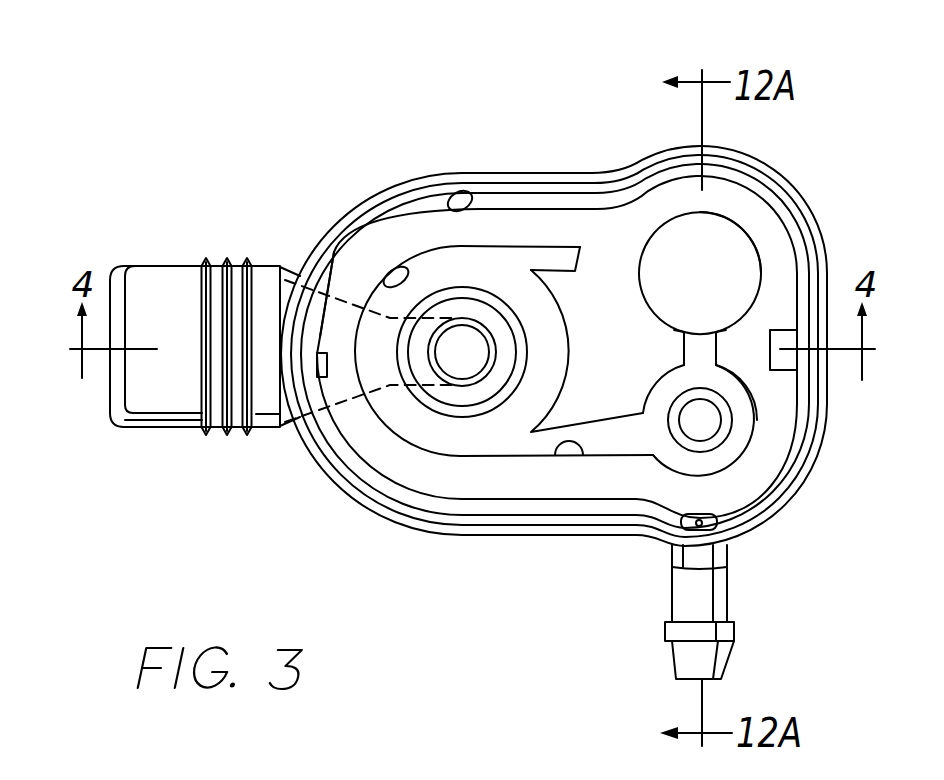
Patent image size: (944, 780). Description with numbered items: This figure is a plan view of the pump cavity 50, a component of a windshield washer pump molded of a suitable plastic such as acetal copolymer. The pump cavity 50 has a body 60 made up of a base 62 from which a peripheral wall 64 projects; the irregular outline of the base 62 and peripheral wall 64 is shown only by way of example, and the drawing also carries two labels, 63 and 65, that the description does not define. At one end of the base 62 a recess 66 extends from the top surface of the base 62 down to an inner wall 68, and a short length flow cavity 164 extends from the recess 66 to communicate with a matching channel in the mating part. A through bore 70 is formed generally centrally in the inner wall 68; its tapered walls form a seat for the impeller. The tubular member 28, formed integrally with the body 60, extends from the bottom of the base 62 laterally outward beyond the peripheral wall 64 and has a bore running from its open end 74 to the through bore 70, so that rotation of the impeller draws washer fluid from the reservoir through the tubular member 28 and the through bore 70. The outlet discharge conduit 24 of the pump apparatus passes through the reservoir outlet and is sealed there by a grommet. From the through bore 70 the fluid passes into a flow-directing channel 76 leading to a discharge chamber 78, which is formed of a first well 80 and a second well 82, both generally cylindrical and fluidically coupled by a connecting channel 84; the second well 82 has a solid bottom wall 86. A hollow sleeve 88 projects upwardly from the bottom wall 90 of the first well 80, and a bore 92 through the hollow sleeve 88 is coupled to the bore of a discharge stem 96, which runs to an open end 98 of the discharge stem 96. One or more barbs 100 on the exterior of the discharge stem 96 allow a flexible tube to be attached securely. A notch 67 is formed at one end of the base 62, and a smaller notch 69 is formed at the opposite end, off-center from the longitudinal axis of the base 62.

The pump cavity 50 is at (233, 62).
The outlet discharge conduit 24 is at (155, 282).
The tubular member 28 is at (168, 402).
The open end 74 is at (112, 405).
The smaller notch 69 is at (320, 366).
The through bore 70 is at (452, 372).
The inner wall 68 is at (488, 435).
The flow-directing channel 76 is at (557, 440).
The short length flow cavity 164 is at (558, 256).
The solid bottom wall 86 is at (670, 242).
The second well 82 is at (737, 223).
The discharge chamber 78 is at (704, 333).
The connecting channel 84 is at (692, 357).
The notch 67 is at (786, 368).
The first well 80 is at (728, 436).
The hollow sleeve 88 is at (700, 418).
The bore 92 is at (752, 415).
The bottom wall 90 is at (713, 468).
The discharge stem 96 is at (672, 588).
The barbs 100 is at (675, 630).
The open end 98 is at (712, 680).
The body 60 is at (455, 172).
The base 62 is at (403, 227).
The boss 63 is at (462, 203).
The peripheral wall 64 is at (496, 170).
The rib 65 is at (336, 253).
The recess 66 is at (387, 280).